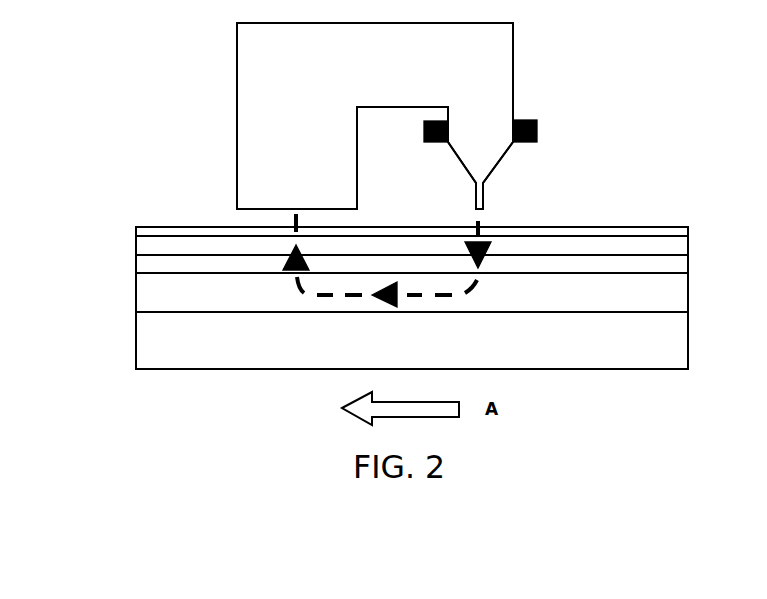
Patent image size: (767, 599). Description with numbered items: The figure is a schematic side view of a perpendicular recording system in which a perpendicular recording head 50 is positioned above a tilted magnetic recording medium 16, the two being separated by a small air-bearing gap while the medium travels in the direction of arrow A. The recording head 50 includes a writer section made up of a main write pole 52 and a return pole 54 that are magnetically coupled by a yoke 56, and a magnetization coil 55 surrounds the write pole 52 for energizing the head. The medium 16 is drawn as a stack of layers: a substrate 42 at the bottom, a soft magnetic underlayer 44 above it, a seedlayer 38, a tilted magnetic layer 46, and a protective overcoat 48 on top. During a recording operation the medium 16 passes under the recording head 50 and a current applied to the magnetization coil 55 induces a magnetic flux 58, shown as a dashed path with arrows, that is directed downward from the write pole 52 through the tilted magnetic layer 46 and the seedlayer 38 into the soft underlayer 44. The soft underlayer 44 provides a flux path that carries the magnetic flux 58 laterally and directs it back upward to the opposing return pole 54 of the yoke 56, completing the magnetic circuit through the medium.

The tilted magnetic recording medium 16 is at (123, 280).
The seedlayer 38 is at (688, 265).
The substrate 42 is at (688, 347).
The soft magnetic underlayer 44 is at (688, 293).
The tilted magnetic layer 46 is at (688, 250).
The protective overcoat 48 is at (688, 227).
The perpendicular recording head 50 is at (210, 107).
The main write pole 52 is at (483, 185).
The return pole 54 is at (237, 180).
The magnetization coil 55 is at (537, 127).
The yoke 56 is at (495, 43).
The magnetic flux 58 is at (485, 219).